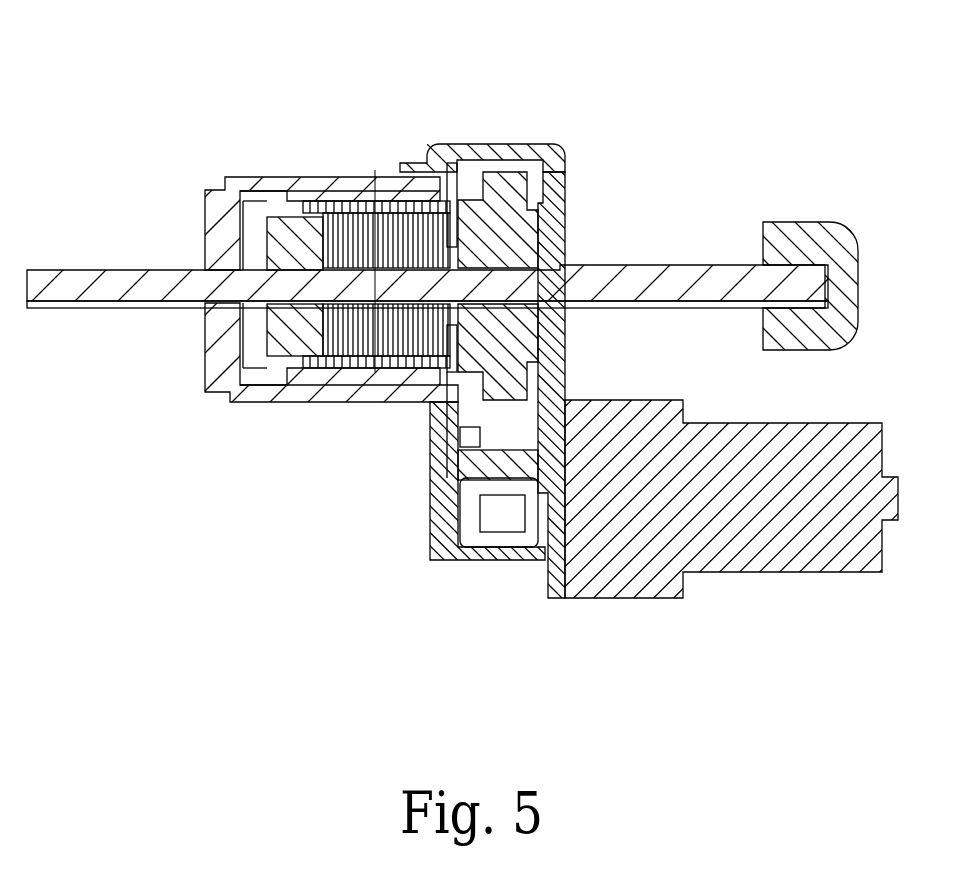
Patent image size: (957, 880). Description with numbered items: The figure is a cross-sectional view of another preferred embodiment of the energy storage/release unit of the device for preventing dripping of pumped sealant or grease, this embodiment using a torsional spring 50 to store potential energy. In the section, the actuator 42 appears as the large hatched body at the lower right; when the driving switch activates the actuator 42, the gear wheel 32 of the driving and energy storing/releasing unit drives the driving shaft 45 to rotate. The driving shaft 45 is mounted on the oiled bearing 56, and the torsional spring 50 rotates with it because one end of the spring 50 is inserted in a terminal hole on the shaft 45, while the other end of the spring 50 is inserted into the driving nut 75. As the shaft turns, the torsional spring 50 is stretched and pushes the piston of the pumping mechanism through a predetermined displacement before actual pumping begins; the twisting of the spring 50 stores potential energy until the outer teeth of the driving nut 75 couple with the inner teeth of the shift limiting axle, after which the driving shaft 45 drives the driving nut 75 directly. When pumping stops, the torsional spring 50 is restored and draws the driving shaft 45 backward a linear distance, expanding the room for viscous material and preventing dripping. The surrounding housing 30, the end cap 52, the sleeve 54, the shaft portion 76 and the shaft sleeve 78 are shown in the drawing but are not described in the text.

The housing 30 is at (548, 130).
The gear wheel 32 is at (449, 508).
The actuator 42 is at (832, 583).
The driving shaft 45 is at (485, 151).
The torsional spring 50 is at (370, 201).
The end cap 52 is at (198, 181).
The lower sleeve 54 is at (284, 391).
The oiled bearing 56 is at (558, 195).
The driving nut 75 is at (258, 220).
The shaft 76 is at (95, 255).
The shaft sleeve 78 is at (710, 322).